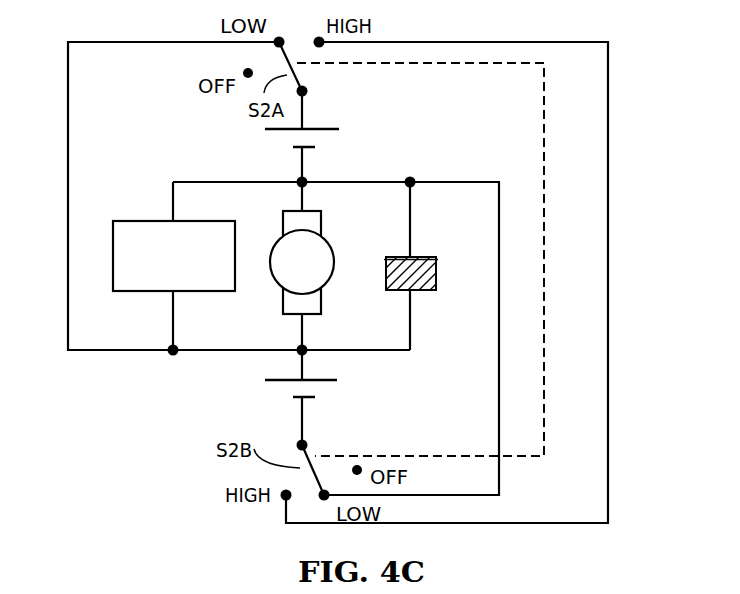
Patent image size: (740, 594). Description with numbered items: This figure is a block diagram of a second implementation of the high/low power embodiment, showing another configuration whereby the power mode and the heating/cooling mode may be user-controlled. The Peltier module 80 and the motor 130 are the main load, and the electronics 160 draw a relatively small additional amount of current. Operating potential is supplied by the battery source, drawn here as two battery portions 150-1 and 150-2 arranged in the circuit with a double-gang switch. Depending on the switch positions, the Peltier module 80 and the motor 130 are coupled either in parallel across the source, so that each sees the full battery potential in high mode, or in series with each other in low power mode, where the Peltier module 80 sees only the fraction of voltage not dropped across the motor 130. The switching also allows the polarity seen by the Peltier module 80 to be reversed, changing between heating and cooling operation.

The electronics 160 is at (185, 268).
The motor 130 is at (317, 276).
The Peltier module 80 is at (386, 268).
The battery 150-1 is at (373, 122).
The battery 150-2 is at (331, 394).